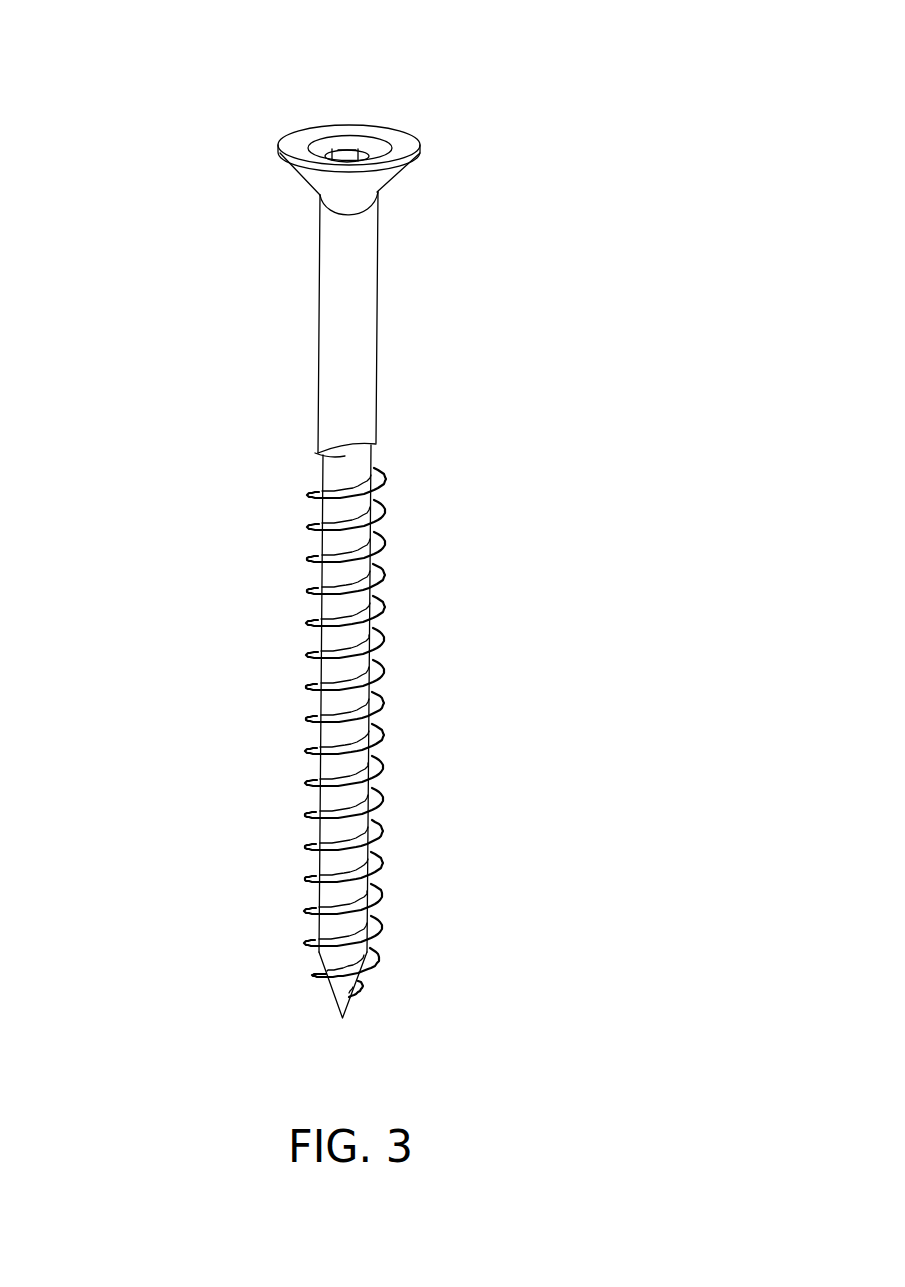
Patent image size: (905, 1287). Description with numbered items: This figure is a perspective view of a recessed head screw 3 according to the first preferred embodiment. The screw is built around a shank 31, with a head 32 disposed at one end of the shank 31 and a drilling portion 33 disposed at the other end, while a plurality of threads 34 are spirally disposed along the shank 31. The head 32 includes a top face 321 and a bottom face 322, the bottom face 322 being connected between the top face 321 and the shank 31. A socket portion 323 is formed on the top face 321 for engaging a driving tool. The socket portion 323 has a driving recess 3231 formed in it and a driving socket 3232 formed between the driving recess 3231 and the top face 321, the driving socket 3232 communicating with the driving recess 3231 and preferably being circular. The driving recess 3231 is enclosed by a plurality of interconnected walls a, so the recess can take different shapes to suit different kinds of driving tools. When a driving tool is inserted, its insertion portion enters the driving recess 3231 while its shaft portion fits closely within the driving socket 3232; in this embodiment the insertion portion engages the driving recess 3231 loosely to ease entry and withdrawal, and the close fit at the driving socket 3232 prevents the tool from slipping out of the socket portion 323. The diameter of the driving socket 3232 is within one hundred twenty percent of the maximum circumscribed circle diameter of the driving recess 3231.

The recessed head screw 3 is at (177, 155).
The shank 31 is at (375, 385).
The head 32 is at (433, 160).
The drilling portion 33 is at (338, 1012).
The threads 34 is at (312, 717).
The top face 321 is at (331, 133).
The bottom face 322 is at (378, 197).
The socket portion 323 is at (373, 138).
The driving recess 3231 is at (365, 160).
The driving socket 3232 is at (323, 147).
The interconnected walls a is at (363, 163).